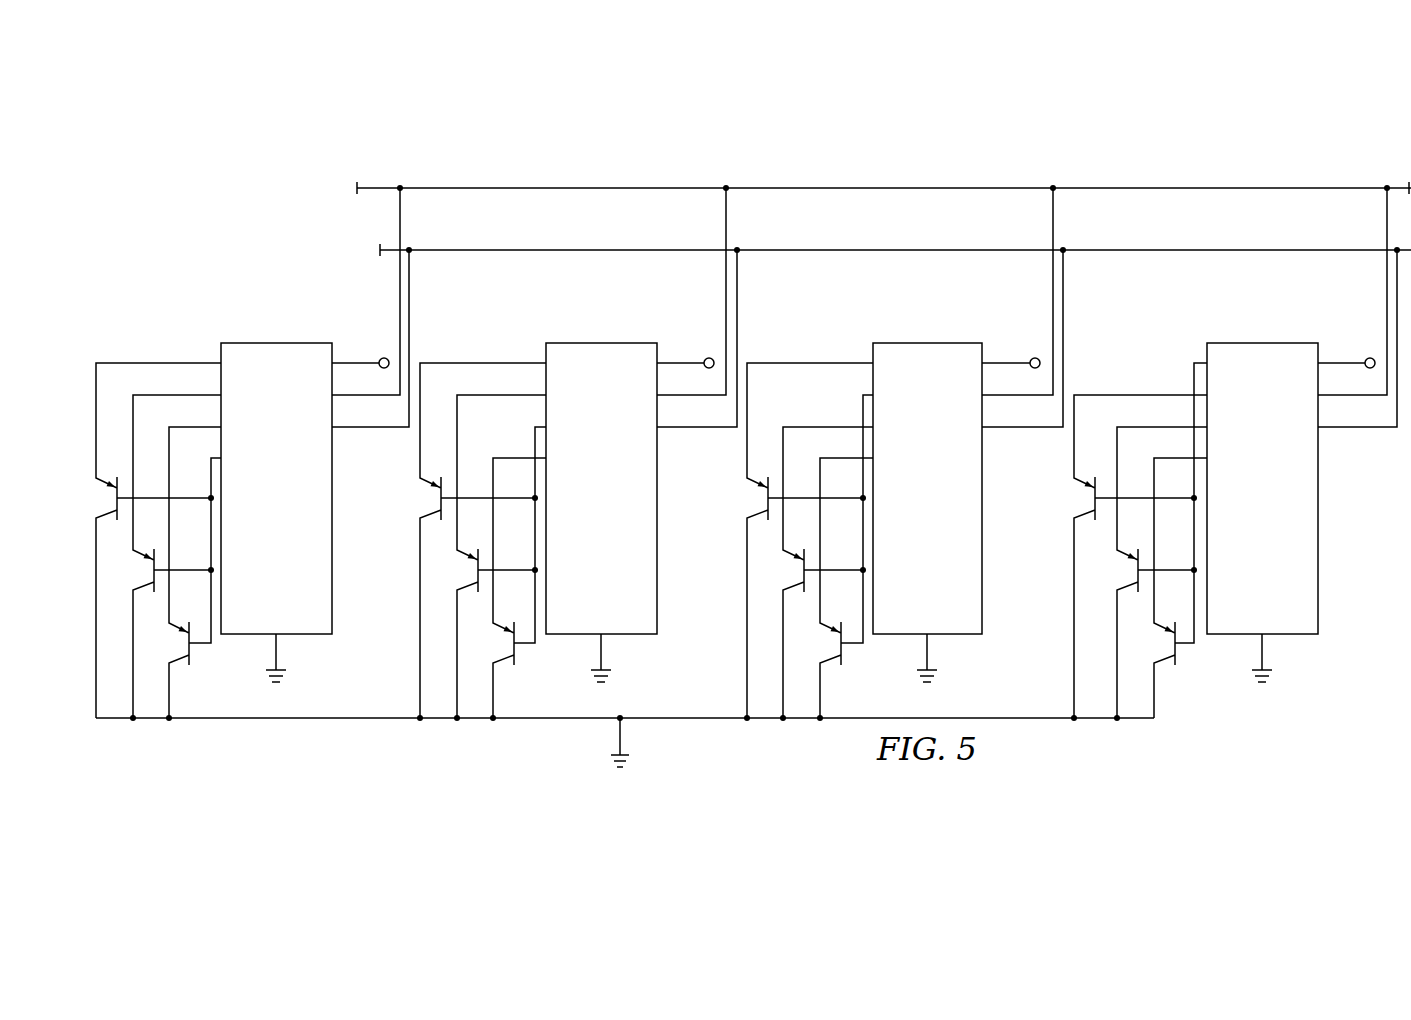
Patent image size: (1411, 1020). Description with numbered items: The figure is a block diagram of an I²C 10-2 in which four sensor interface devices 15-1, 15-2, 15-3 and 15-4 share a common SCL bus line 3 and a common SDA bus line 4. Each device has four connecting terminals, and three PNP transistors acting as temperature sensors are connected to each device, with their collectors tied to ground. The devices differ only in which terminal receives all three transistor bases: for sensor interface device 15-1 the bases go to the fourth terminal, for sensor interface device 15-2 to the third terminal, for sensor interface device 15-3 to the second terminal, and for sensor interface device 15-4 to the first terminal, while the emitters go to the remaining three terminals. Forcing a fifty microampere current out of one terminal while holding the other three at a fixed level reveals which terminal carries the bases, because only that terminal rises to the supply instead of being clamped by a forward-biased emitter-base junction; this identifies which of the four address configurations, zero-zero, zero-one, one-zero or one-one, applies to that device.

The I²C 10-2 is at (435, 131).
The sensor interface device 15-1 is at (267, 343).
The sensor interface device 15-2 is at (592, 343).
The sensor interface device 15-3 is at (940, 343).
The sensor interface device 15-4 is at (1271, 343).
The SCL bus line 3 is at (1226, 188).
The SDA bus line 4 is at (1205, 250).